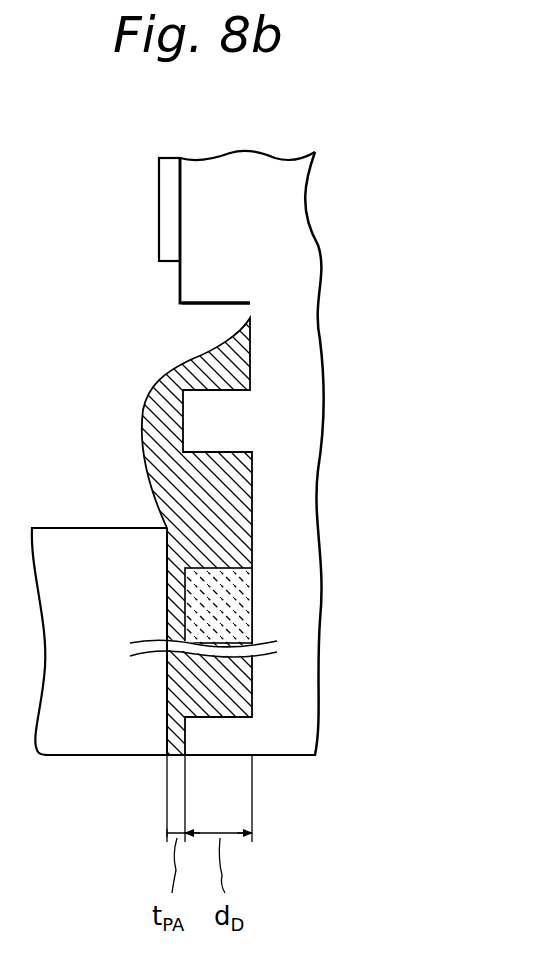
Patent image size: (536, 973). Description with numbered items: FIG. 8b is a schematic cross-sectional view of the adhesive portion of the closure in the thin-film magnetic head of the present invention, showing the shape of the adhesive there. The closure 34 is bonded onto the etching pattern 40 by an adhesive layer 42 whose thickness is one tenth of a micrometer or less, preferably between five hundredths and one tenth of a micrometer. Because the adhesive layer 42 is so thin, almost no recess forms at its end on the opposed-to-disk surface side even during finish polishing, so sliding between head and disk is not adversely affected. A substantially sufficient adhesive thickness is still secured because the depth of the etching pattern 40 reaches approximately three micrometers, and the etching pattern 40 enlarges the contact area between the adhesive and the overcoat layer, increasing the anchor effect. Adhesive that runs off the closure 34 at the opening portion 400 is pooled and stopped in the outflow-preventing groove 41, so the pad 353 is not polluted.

The closure 34 is at (87, 567).
The etching pattern 40 is at (255, 493).
The outflow-preventing groove 41 is at (250, 305).
The adhesive layer 42 is at (172, 607).
The pad 353 is at (172, 191).
The opening portion 400 is at (163, 476).